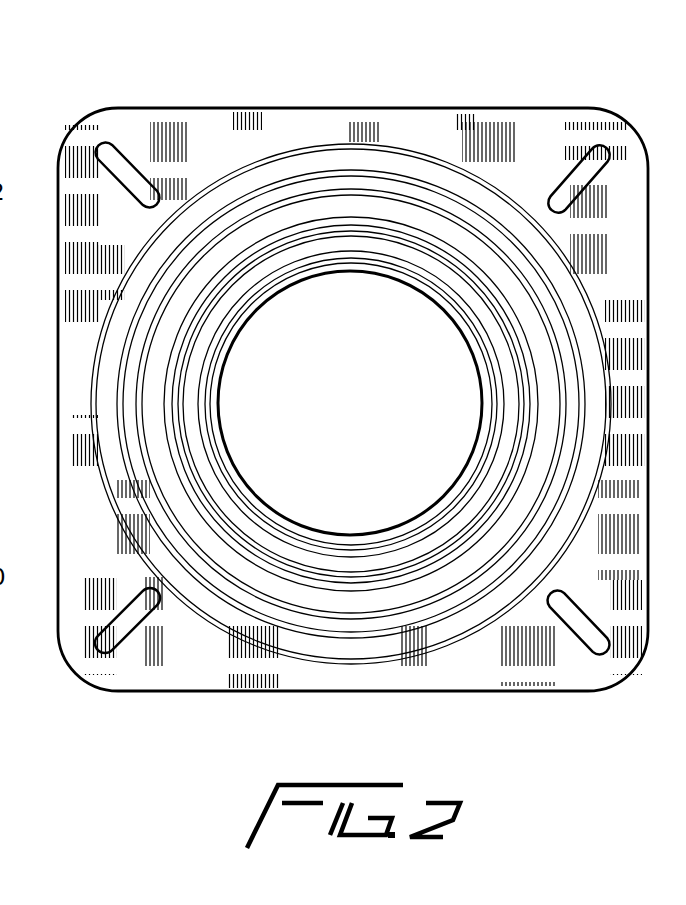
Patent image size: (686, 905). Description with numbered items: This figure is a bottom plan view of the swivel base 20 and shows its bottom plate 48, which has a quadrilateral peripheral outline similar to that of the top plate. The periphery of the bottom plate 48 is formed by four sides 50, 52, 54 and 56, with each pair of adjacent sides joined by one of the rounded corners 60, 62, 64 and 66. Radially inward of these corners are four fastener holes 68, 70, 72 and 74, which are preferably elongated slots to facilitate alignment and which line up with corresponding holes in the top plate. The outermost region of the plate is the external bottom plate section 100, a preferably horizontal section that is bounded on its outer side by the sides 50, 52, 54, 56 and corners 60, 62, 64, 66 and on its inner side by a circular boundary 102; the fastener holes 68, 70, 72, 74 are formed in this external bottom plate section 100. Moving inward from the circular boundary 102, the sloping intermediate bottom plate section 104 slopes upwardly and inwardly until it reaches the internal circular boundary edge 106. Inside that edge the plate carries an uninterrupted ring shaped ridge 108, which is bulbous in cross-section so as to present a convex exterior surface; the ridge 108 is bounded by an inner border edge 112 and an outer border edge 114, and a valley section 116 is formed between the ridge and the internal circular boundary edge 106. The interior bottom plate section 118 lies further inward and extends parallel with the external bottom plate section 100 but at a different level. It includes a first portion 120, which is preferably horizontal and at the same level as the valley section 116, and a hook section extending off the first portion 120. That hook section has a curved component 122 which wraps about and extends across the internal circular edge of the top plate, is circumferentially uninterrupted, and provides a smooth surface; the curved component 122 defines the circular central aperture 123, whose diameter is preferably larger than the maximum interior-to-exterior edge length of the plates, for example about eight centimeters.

The swivel base 20 is at (415, 96).
The bottom plate 48 is at (486, 146).
The side 50 is at (298, 108).
The side 52 is at (60, 262).
The side 54 is at (300, 692).
The side 56 is at (648, 430).
The rounded corner 60 is at (620, 122).
The rounded corner 62 is at (78, 130).
The rounded corner 64 is at (80, 678).
The rounded corner 66 is at (622, 676).
The fastener hole 68 is at (585, 200).
The fastener hole 70 is at (97, 162).
The fastener hole 72 is at (110, 655).
The fastener hole 74 is at (595, 655).
The external bottom plate section 100 is at (206, 665).
The circular boundary 102 is at (268, 636).
The sloping intermediate bottom plate section 104 is at (112, 466).
The internal circular boundary edge 106 is at (148, 487).
The ring shaped ridge 108 is at (316, 218).
The inner border edge 112 is at (418, 240).
The outer border edge 114 is at (383, 603).
The valley section 116 is at (462, 594).
The interior bottom plate section 118 is at (318, 556).
The first portion 120 is at (350, 548).
The curved component 122 is at (478, 458).
The central aperture 123 is at (376, 441).